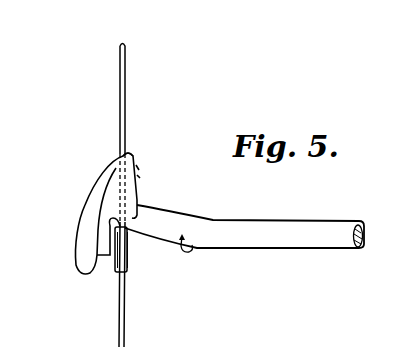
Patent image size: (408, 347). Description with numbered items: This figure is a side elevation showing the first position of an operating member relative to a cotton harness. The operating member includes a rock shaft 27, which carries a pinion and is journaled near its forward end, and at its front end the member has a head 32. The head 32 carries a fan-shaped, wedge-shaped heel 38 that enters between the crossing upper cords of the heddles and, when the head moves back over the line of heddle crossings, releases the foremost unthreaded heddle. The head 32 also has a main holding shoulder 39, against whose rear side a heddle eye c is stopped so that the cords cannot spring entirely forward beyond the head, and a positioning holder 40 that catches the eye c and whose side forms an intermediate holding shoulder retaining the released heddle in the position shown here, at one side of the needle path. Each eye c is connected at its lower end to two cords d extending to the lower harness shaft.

The rock shaft 27 is at (284, 222).
The head 32 is at (107, 182).
The fan-shaped heel 38 is at (132, 160).
The holding shoulder 39 is at (79, 273).
The positioning holder 40 is at (95, 234).
The eye c is at (128, 265).
The cords d is at (133, 196).